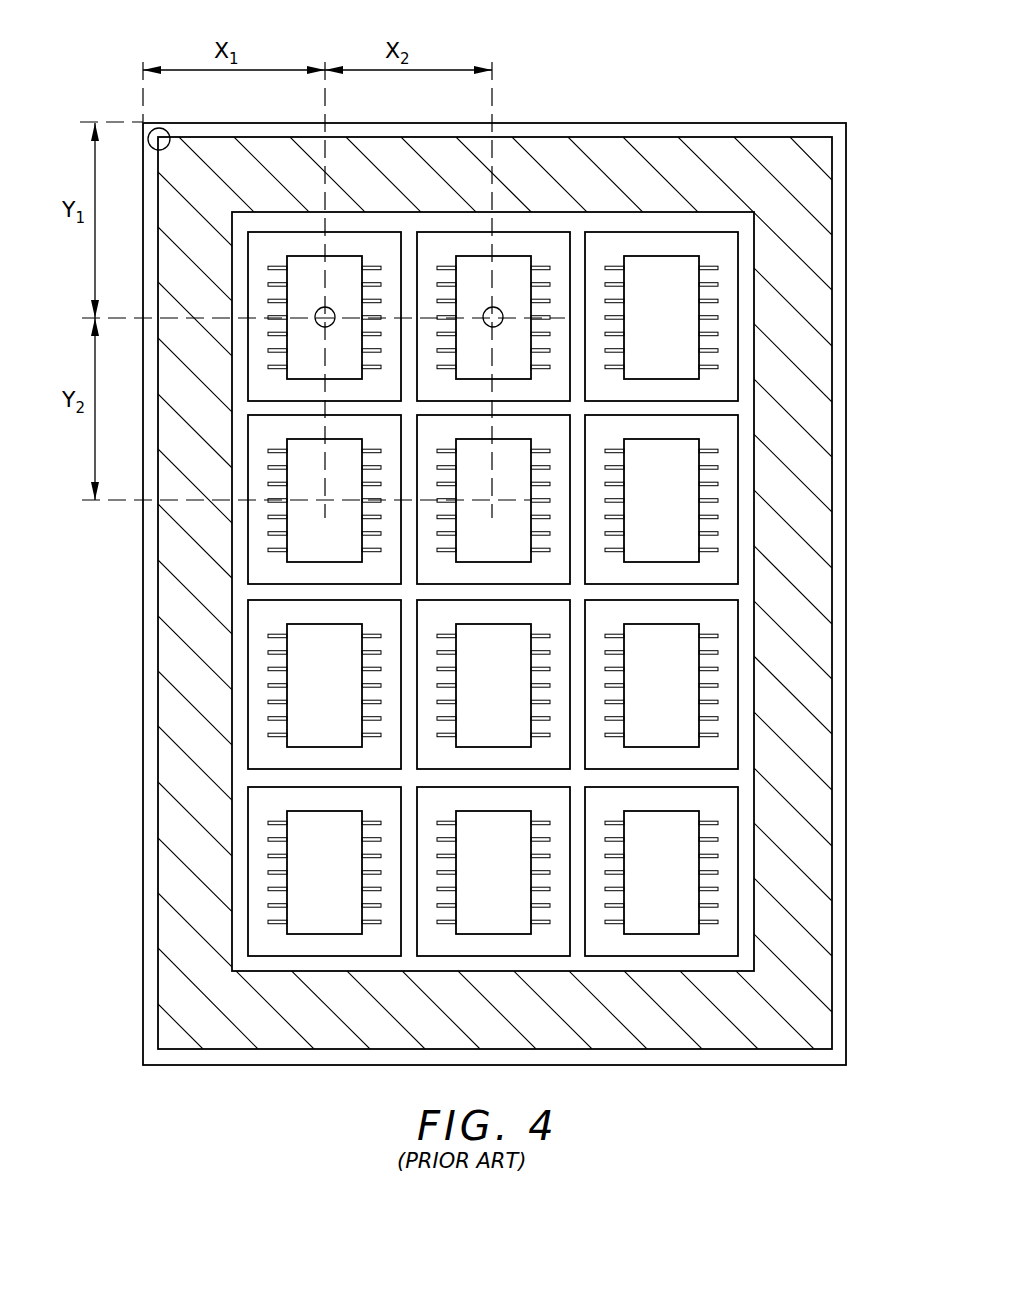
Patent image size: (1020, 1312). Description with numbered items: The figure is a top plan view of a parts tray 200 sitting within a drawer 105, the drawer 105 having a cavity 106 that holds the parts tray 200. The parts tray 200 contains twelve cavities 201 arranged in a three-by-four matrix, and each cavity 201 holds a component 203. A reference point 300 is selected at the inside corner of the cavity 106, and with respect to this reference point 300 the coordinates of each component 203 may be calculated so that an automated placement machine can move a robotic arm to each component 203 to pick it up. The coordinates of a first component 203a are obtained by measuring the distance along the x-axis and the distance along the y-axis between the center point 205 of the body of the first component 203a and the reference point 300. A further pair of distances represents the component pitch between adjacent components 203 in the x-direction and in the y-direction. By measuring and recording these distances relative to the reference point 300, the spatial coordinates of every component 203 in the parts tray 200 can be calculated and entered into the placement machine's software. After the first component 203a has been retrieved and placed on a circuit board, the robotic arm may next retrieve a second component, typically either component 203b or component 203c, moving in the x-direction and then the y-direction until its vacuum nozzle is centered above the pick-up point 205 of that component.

The drawer 105 is at (841, 629).
The cavity 106 is at (789, 756).
The parts tray 200 is at (749, 262).
The cavity 201 is at (720, 387).
The component 203 is at (662, 510).
The first component 203a is at (335, 268).
The second component 203b is at (507, 269).
The component 203c is at (303, 468).
The center point 205 is at (317, 310).
The reference point 300 is at (148, 125).